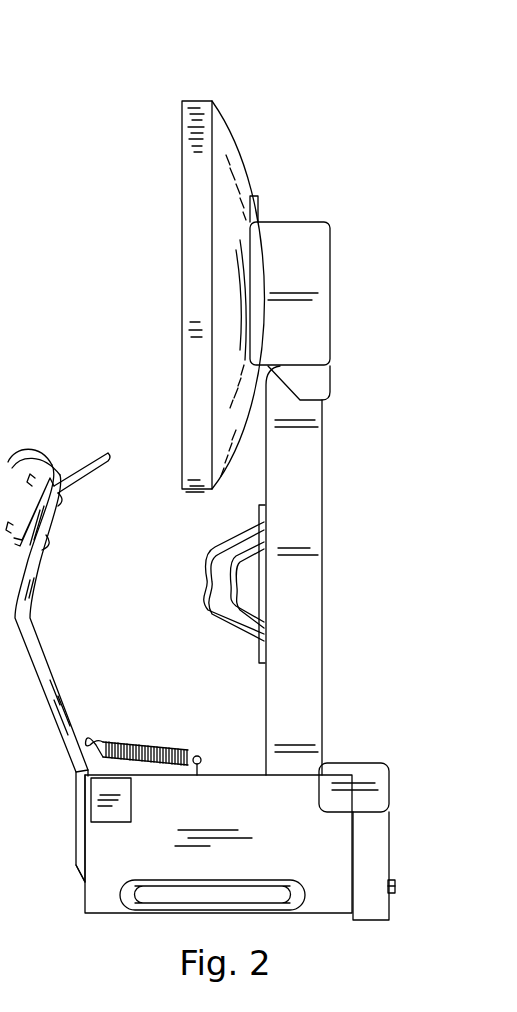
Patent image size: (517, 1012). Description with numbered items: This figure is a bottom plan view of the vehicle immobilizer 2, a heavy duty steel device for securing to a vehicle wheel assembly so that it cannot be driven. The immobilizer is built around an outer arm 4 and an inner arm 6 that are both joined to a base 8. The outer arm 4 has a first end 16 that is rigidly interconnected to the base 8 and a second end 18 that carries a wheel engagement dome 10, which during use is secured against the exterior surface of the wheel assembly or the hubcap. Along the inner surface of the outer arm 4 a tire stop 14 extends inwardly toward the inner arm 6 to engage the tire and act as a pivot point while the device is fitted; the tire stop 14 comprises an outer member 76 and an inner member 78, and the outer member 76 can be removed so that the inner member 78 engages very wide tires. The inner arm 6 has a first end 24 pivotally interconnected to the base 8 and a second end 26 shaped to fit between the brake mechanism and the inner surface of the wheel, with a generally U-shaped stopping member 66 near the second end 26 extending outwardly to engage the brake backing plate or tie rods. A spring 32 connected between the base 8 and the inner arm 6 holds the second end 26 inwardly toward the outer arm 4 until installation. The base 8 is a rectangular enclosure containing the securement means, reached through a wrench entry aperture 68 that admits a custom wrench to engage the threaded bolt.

The vehicle immobilizer 2 is at (245, 101).
The wheel engagement dome 10 is at (182, 263).
The second end of outer arm 18 is at (325, 410).
The outer arm 4 is at (325, 505).
The tire stop 14 is at (185, 592).
The outer member 76 is at (205, 555).
The inner member 78 is at (168, 590).
The inner arm 6 is at (65, 642).
The stopping member 66 is at (25, 450).
The second end of inner arm 26 is at (93, 485).
The first end of inner arm 24 is at (75, 825).
The spring 32 is at (110, 740).
The first end of outer arm 16 is at (262, 755).
The base 8 is at (357, 762).
The wrench entry aperture 68 is at (395, 878).